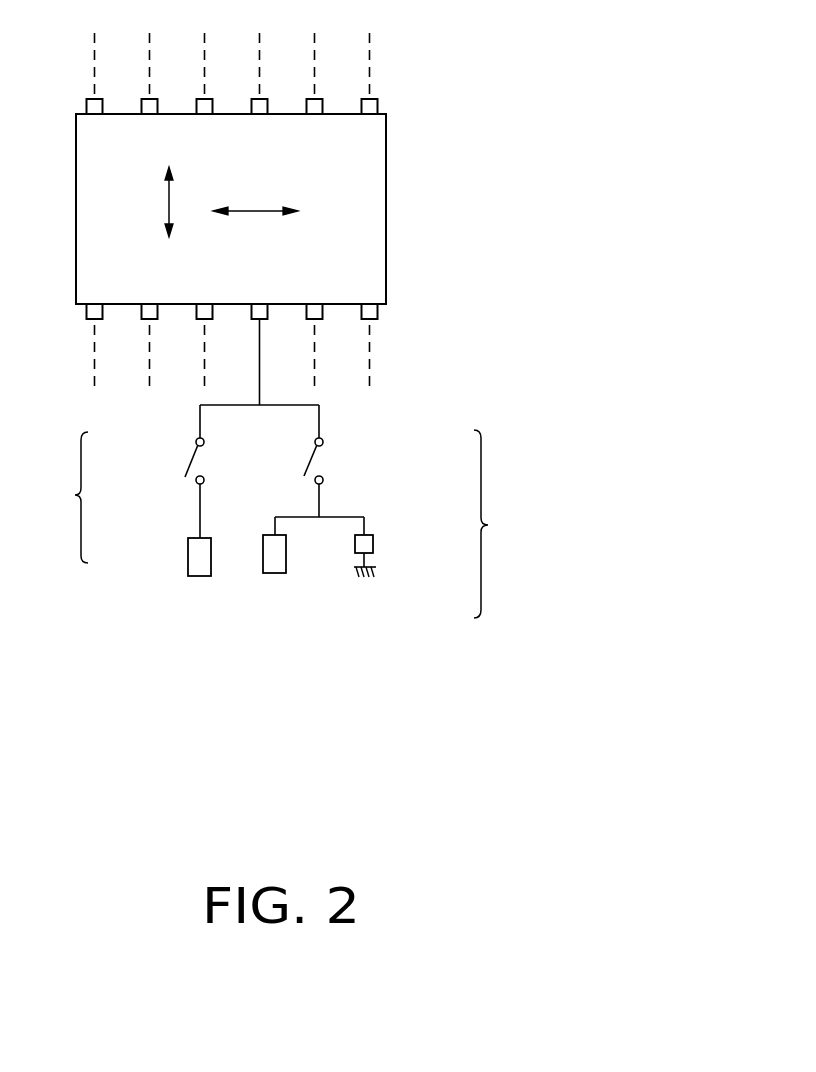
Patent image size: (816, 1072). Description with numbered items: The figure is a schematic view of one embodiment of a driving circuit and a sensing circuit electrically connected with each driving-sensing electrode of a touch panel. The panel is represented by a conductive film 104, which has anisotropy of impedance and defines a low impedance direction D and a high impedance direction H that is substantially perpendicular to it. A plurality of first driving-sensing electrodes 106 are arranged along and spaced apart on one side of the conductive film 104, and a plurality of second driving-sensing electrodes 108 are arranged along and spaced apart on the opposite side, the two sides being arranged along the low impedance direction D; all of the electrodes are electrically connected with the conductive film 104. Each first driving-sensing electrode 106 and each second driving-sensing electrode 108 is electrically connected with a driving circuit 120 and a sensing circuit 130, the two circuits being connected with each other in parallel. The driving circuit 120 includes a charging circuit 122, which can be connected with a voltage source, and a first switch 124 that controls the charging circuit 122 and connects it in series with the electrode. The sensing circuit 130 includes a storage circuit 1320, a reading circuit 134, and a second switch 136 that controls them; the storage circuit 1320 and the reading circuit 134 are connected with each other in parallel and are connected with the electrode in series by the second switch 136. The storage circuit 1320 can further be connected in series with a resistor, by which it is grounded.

The conductive film 104 is at (364, 207).
The second driving-sensing electrodes 108 is at (370, 108).
The first driving-sensing electrodes 106 is at (370, 312).
The driving circuit 120 is at (119, 490).
The first switch 124 is at (190, 464).
The charging circuit 122 is at (192, 560).
The sensing circuit 130 is at (403, 513).
The second switch 136 is at (320, 457).
The reading circuit 134 is at (279, 558).
The storage circuit 1320 is at (371, 551).